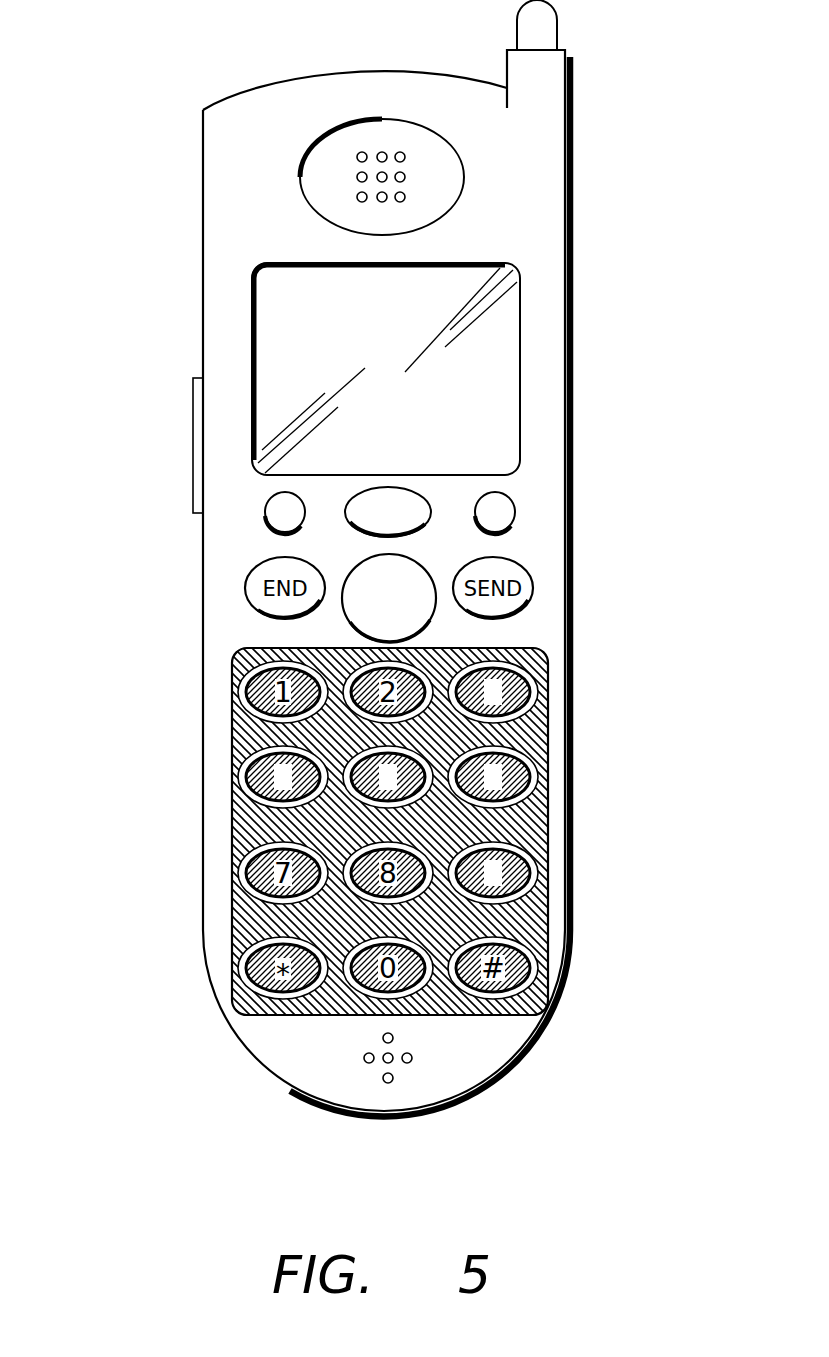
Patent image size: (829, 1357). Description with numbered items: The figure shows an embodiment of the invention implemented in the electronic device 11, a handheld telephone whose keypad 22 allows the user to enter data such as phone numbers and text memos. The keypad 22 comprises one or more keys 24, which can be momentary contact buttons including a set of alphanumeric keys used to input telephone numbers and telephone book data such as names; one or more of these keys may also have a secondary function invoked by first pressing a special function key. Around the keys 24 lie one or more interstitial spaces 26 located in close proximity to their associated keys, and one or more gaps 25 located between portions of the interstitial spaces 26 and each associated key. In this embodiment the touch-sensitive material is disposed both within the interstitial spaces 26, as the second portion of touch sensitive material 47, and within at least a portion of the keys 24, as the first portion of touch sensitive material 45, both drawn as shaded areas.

The electronic device 11 is at (165, 1082).
The keypad 22 is at (235, 652).
The keys 24 is at (532, 752).
The gaps 25 is at (528, 668).
The interstitial spaces 26 is at (505, 733).
The first portion of touch sensitive material 45 is at (268, 825).
The second portion of touch sensitive material 47 is at (510, 863).